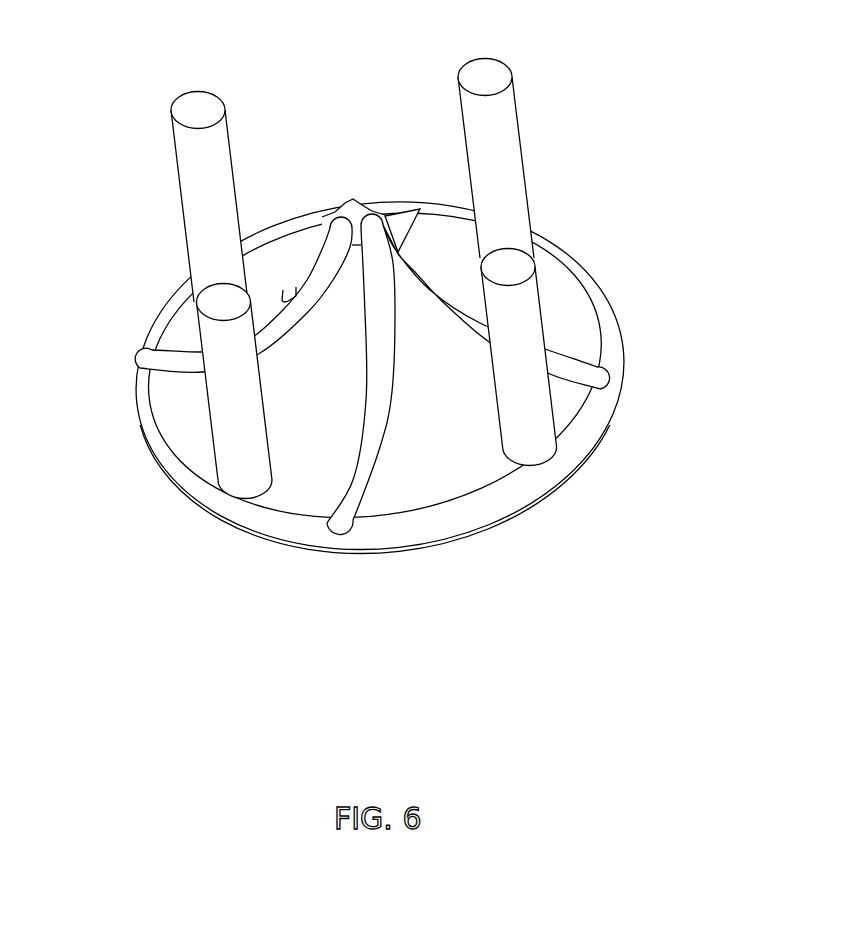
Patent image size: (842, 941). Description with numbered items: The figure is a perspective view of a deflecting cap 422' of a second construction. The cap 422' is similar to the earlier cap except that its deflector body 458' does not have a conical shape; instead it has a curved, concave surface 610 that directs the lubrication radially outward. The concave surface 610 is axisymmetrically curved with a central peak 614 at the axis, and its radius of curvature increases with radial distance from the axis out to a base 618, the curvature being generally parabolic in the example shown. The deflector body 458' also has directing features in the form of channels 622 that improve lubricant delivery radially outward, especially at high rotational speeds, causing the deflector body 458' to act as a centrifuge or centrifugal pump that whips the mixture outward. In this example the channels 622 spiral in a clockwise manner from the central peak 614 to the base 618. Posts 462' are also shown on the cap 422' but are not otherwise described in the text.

The post 462' is at (375, 304).
The cap 422' is at (430, 376).
The deflector body 458' is at (442, 380).
The concave surface 610 is at (283, 290).
The central peak 614 is at (353, 198).
The base 618 is at (515, 497).
The channels 622 is at (353, 483).